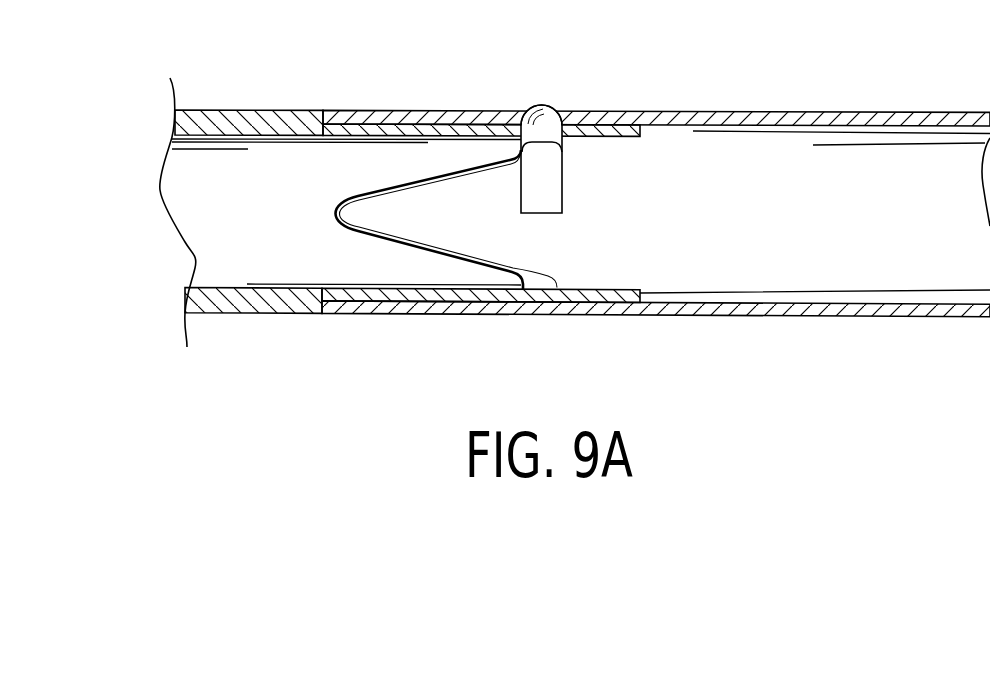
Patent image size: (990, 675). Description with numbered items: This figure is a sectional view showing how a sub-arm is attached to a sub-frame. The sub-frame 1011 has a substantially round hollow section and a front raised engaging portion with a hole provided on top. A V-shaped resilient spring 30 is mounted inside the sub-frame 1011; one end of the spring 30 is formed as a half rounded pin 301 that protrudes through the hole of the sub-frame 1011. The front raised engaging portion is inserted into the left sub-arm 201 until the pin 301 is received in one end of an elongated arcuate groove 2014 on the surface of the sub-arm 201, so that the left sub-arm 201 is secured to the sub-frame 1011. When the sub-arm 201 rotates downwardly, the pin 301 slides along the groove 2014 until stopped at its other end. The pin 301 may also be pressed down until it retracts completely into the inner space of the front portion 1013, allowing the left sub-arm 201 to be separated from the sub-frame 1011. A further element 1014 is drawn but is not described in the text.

The sub-frame 1011 is at (238, 306).
The front portion 1013 is at (423, 303).
The upper plate 1014 is at (508, 129).
The left sub-arm 201 is at (828, 120).
The elongated arcuate groove 2014 is at (545, 187).
The resilient spring 30 is at (340, 228).
The pin 301 is at (545, 118).